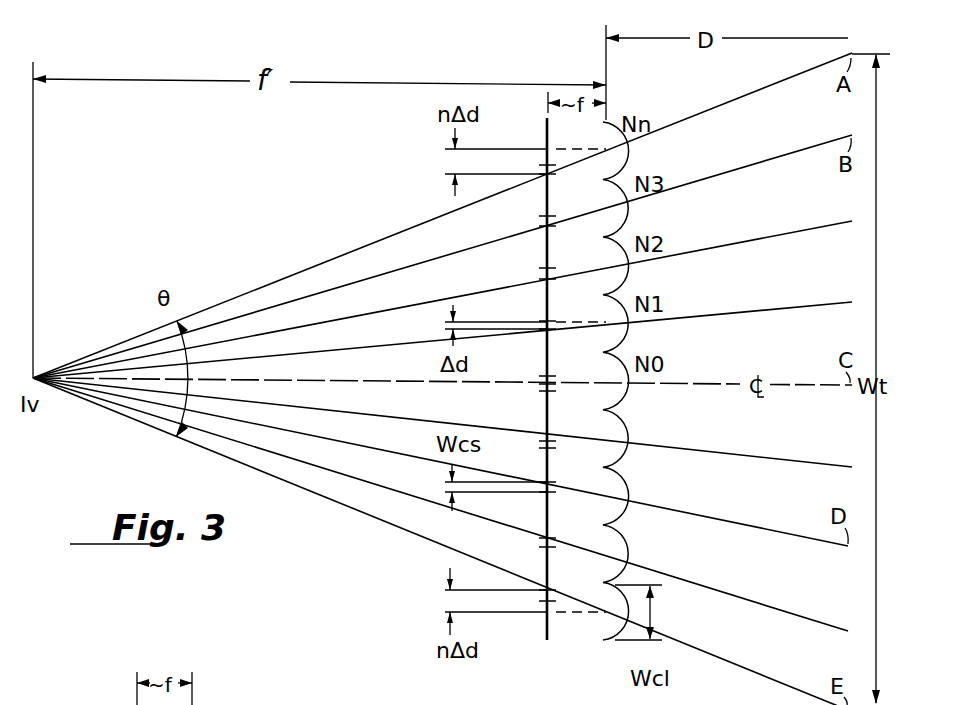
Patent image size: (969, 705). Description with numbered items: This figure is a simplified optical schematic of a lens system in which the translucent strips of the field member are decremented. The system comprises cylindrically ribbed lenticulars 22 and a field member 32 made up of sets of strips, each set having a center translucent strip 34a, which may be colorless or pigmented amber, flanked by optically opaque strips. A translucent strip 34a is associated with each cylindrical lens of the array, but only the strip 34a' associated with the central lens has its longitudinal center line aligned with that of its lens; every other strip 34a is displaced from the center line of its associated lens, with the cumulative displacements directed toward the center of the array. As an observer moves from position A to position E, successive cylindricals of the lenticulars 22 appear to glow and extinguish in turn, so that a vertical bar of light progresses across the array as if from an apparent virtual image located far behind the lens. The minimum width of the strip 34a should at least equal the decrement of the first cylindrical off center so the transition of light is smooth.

The field member 32 is at (544, 634).
The center translucent strip 34a is at (516, 383).
The strip associated with the central lens 34a' is at (517, 398).
The cylindrically ribbed lenticulars 22 is at (629, 556).